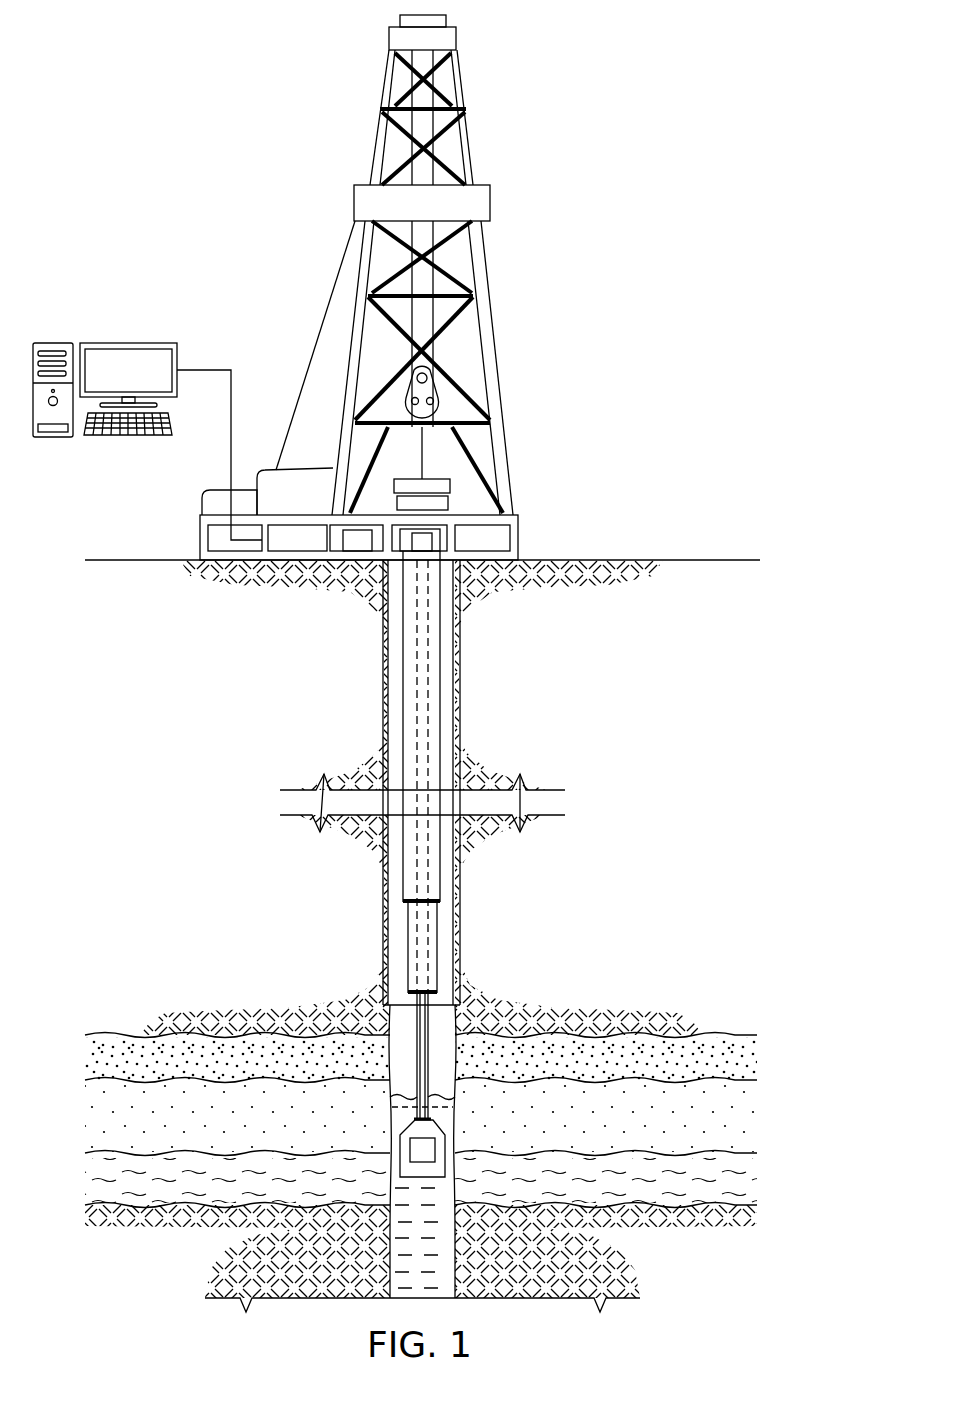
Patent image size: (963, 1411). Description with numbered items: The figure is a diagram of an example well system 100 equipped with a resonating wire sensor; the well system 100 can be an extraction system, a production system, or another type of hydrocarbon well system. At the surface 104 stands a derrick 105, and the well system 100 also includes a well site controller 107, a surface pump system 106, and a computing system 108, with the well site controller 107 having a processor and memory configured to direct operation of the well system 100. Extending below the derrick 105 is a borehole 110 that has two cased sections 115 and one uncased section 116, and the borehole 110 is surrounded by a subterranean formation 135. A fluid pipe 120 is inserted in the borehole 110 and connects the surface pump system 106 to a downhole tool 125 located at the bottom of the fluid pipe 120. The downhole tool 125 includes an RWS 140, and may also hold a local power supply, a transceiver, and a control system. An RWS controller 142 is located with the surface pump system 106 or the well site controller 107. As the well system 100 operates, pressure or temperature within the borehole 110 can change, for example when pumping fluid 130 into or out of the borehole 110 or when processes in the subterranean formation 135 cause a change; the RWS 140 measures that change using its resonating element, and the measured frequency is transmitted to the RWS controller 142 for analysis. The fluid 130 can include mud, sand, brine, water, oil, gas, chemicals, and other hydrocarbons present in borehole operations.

The well system 100 is at (256, 135).
The surface 104 is at (560, 558).
The derrick 105 is at (498, 368).
The surface pump system 106 is at (425, 552).
The well site controller 107 is at (372, 506).
The computing system 108 is at (128, 343).
The borehole 110 is at (383, 925).
The cased sections 115 is at (441, 862).
The uncased section 116 is at (456, 1050).
The fluid pipe 120 is at (428, 1022).
The downhole tool 125 is at (447, 1148).
The fluid 130 is at (392, 1112).
The subterranean formation 135 is at (776, 1131).
The RWS 140 is at (410, 1158).
The RWS controller 142 is at (358, 552).